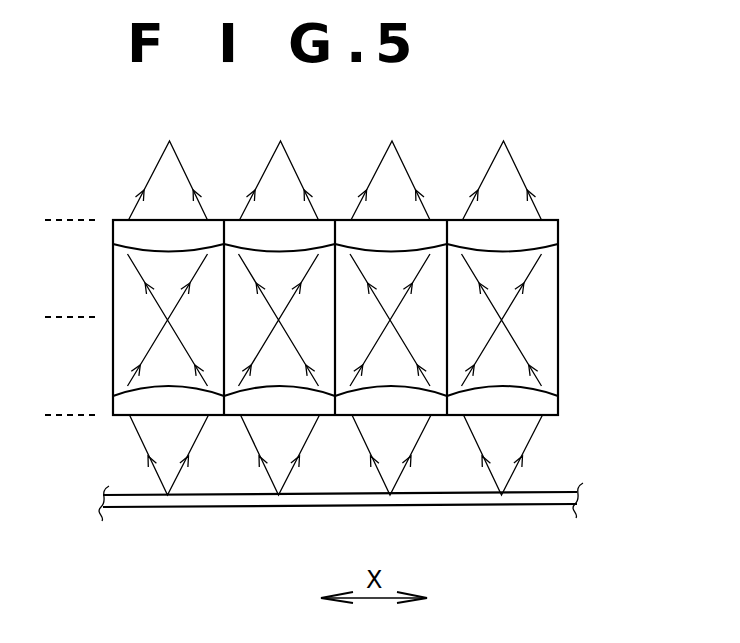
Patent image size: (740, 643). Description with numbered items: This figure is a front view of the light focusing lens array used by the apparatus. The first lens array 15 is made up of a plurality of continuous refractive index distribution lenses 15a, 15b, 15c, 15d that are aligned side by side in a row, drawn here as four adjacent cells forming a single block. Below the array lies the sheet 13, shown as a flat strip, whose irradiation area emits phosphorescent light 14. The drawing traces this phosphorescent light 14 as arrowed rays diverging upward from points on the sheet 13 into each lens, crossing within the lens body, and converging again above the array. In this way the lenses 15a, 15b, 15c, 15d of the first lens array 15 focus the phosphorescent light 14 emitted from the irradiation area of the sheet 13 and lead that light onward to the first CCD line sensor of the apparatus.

The sheet 13 is at (530, 505).
The phosphorescent light 14 is at (535, 437).
The first lens array 15 is at (95, 245).
The continuous refractive index distribution lens 15a is at (540, 230).
The continuous refractive index distribution lens 15b is at (425, 235).
The continuous refractive index distribution lens 15c is at (324, 230).
The continuous refractive index distribution lens 15d is at (216, 232).